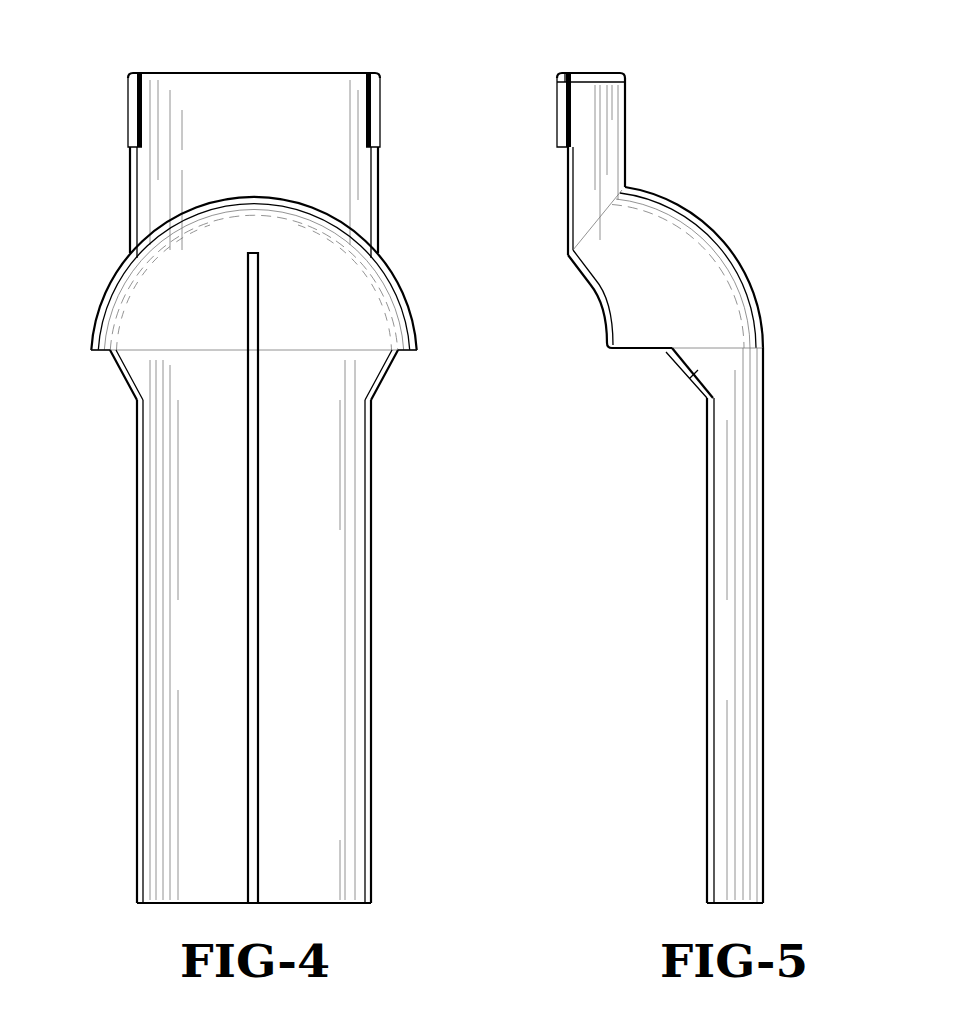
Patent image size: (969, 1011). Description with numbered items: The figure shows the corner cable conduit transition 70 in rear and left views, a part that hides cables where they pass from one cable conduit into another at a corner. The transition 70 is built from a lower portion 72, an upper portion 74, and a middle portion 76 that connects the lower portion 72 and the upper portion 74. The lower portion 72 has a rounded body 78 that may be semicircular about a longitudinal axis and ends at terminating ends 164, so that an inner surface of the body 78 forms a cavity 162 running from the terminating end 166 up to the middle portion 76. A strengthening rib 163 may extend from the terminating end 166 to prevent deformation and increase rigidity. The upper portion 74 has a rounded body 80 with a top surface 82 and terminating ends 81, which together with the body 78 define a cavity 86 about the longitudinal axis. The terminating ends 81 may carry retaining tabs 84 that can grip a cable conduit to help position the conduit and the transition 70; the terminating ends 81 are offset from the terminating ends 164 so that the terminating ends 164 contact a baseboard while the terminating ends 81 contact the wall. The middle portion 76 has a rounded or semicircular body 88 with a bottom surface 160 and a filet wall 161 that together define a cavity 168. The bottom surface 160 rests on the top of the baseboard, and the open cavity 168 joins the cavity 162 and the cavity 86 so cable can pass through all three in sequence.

In FIG. 4, the corner cable conduit transition 70 is at (405, 516).
In FIG. 5, the corner cable conduit transition 70 is at (718, 198).
In FIG. 4, the lower portion 72 is at (280, 651).
In FIG. 5, the lower portion 72 is at (742, 625).
In FIG. 4, the upper portion 74 is at (84, 165).
In FIG. 5, the upper portion 74 is at (674, 159).
In FIG. 4, the middle portion 76 is at (292, 273).
In FIG. 5, the middle portion 76 is at (711, 267).
In FIG. 4, the rounded body 78 is at (280, 651).
In FIG. 5, the rounded body 78 is at (742, 625).
In FIG. 4, the rounded body 80 is at (120, 192).
In FIG. 5, the rounded body 80 is at (634, 117).
In FIG. 4, the terminating ends 81 is at (131, 160).
In FIG. 5, the terminating ends 81 is at (567, 195).
In FIG. 4, the top surface 82 is at (217, 73).
In FIG. 5, the top surface 82 is at (596, 73).
In FIG. 4, the retaining tabs 84 is at (130, 107).
In FIG. 5, the retaining tabs 84 is at (562, 105).
In FIG. 4, the cavity 86 is at (262, 133).
In FIG. 4, the body 88 is at (410, 268).
In FIG. 5, the body 88 is at (733, 235).
In FIG. 4, the bottom surface 160 is at (91, 352).
In FIG. 5, the bottom surface 160 is at (637, 352).
In FIG. 4, the filet wall 161 is at (121, 378).
In FIG. 5, the filet wall 161 is at (693, 375).
In FIG. 4, the cavity 162 is at (320, 672).
In FIG. 4, the strengthening rib 163 is at (258, 500).
In FIG. 4, the terminating ends 164 is at (137, 498).
In FIG. 5, the terminating ends 164 is at (708, 634).
In FIG. 4, the terminating end 166 is at (338, 904).
In FIG. 5, the terminating end 166 is at (718, 903).
In FIG. 4, the cavity 168 is at (197, 293).